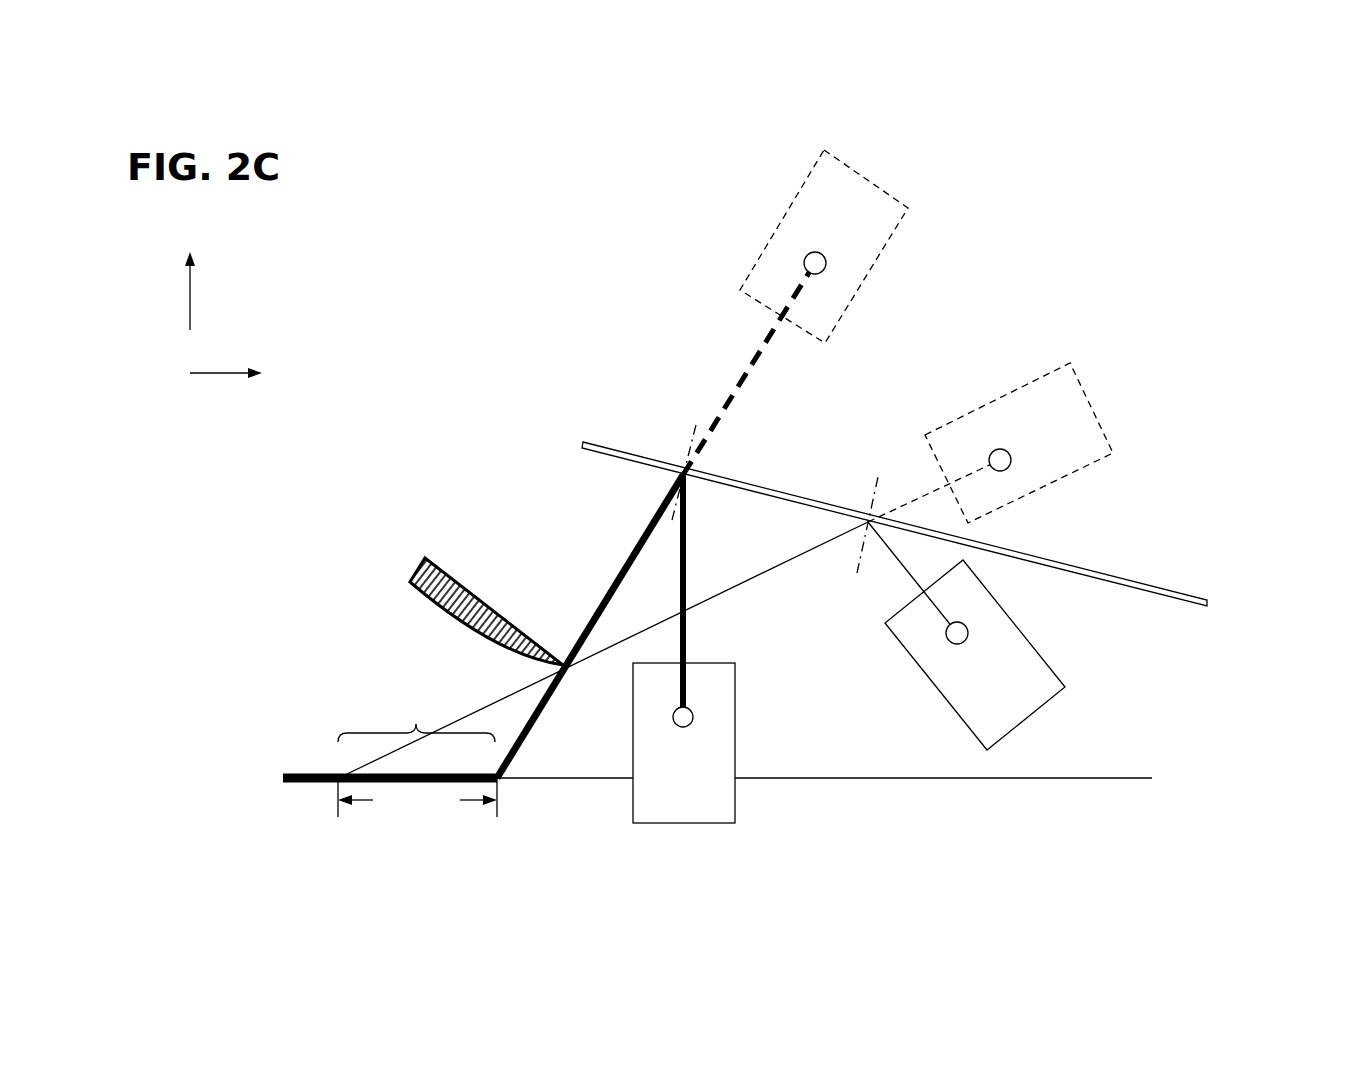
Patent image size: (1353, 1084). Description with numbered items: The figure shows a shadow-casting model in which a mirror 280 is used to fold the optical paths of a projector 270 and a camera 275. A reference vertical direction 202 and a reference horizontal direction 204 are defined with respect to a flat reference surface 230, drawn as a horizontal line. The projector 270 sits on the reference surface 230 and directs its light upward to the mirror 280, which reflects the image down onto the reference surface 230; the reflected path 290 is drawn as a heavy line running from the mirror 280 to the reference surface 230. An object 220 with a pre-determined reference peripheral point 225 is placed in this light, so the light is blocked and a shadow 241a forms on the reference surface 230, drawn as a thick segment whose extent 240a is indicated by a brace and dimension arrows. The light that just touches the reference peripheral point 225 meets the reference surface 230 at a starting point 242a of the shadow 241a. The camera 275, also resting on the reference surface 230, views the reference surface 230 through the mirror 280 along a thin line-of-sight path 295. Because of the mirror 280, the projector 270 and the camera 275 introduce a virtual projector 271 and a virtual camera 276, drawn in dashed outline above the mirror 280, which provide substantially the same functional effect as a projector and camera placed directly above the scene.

The reference vertical direction 202 is at (188, 297).
The reference horizontal direction 204 is at (233, 371).
The object 220 is at (463, 610).
The reference peripheral point 225 is at (563, 638).
The reference surface 230 is at (1099, 780).
The projected distance 240a is at (417, 727).
The shadow 241a is at (310, 775).
The starting point of the shadow 242a is at (497, 838).
The projector 270 is at (723, 800).
The virtual projector 271 is at (875, 195).
The camera 275 is at (1027, 675).
The virtual camera 276 is at (1060, 385).
The mirror 280 is at (1167, 593).
The projector light ray 290 is at (630, 553).
The camera line of sight 295 is at (767, 572).